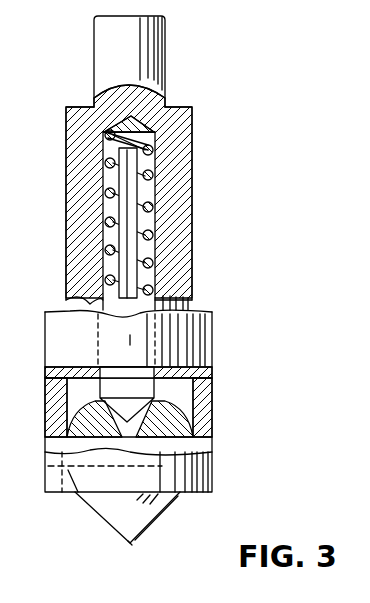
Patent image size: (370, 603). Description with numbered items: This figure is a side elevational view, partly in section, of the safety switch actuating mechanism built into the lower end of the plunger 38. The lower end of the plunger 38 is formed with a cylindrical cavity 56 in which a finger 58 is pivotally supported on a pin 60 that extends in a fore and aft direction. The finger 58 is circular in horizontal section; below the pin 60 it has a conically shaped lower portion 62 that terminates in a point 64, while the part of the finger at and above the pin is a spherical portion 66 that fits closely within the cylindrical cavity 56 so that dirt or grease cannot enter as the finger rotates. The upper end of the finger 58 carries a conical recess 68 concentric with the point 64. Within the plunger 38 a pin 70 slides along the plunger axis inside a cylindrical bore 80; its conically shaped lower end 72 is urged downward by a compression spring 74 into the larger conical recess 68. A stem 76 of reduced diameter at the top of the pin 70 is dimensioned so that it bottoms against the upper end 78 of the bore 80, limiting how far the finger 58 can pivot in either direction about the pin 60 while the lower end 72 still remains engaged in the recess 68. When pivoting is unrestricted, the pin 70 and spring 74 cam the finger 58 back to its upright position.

The plunger 38 is at (213, 330).
The cylindrical cavity 56 is at (190, 403).
The finger 58 is at (105, 512).
The pin 60 is at (195, 446).
The conically shaped lower portion 62 is at (165, 503).
The point 64 is at (132, 543).
The spherical portion 66 is at (195, 424).
The conical recess 68 is at (150, 407).
The pin 70 is at (150, 302).
The conically shaped lower end 72 is at (122, 402).
The compression spring 74 is at (153, 173).
The stem 76 is at (137, 220).
The upper end of bore 78 is at (124, 134).
The cylindrical bore 80 is at (155, 253).